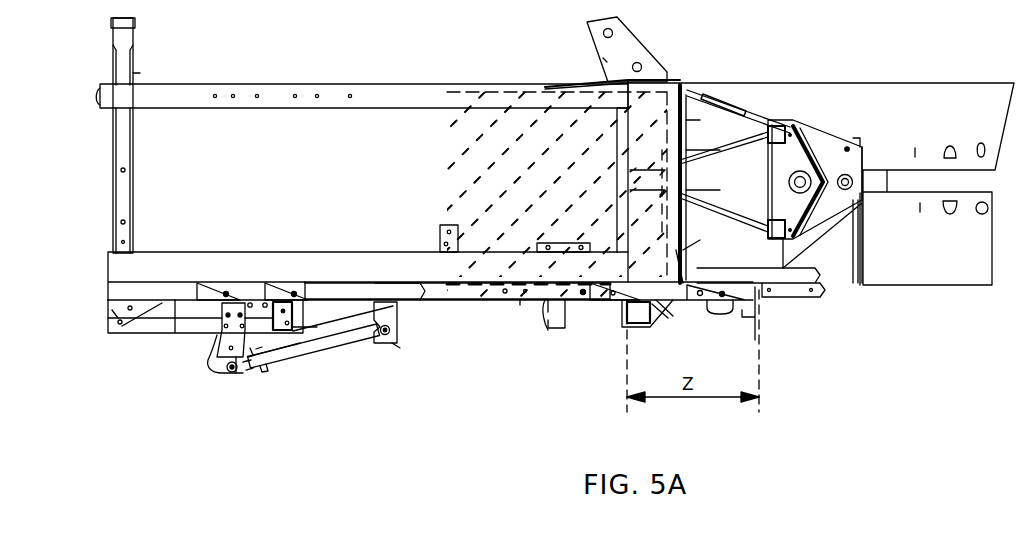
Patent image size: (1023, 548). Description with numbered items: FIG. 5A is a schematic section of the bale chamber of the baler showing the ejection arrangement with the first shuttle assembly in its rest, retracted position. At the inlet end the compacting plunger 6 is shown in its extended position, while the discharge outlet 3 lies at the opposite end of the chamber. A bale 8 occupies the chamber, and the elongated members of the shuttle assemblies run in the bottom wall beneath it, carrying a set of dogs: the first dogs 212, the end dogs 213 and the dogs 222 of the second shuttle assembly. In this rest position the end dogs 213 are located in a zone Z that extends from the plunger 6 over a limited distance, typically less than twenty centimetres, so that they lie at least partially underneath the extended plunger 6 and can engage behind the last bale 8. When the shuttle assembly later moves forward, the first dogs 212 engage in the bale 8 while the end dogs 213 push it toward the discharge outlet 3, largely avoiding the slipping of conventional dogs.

The discharge outlet 3 is at (107, 212).
The bale 8 is at (526, 120).
The compacting plunger 6 is at (693, 130).
The first dogs 212 is at (345, 283).
The dogs 222 is at (200, 300).
The end dogs 213 is at (684, 300).